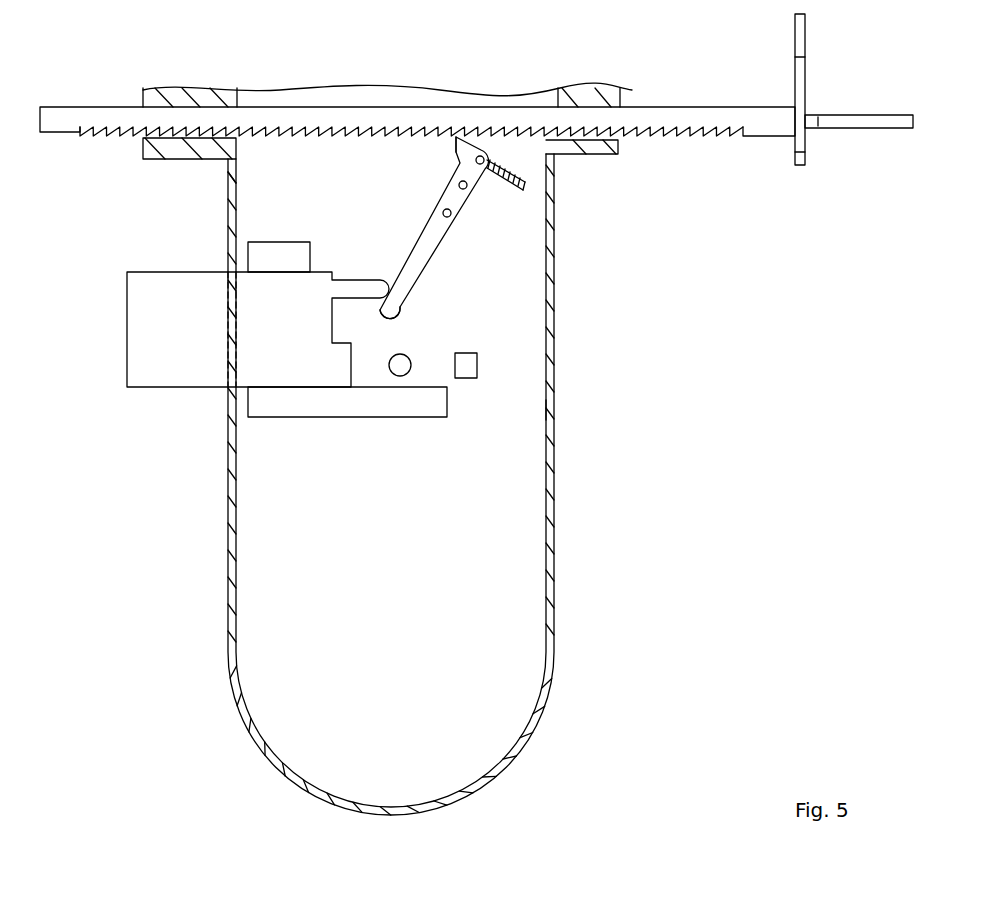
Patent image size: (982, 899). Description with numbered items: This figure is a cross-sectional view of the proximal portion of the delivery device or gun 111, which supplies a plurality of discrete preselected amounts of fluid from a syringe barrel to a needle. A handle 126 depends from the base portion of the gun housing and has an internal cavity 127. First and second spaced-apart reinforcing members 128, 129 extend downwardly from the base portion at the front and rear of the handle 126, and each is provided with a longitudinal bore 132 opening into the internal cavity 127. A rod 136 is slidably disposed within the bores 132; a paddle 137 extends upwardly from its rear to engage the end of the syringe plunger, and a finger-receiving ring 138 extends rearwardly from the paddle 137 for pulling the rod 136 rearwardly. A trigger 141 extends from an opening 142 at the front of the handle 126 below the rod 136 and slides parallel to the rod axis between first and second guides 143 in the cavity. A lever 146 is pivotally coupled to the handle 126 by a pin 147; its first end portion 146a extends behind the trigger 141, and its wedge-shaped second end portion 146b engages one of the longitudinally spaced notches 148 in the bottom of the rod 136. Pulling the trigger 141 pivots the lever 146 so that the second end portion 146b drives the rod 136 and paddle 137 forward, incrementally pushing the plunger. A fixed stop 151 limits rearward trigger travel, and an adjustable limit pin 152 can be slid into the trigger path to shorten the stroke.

The gun 111 is at (573, 380).
The handle 126 is at (554, 515).
The internal cavity 127 is at (551, 606).
The first reinforcing member 128 is at (175, 100).
The second reinforcing member 129 is at (580, 100).
The bore 132 is at (197, 145).
The rod 136 is at (68, 133).
The paddle 137 is at (805, 48).
The ring 138 is at (853, 128).
The trigger 141 is at (178, 362).
The opening 142 is at (225, 288).
The guides 143 is at (287, 255).
The lever 146 is at (440, 255).
The first end portion 146a is at (392, 312).
The second end portion 146b is at (460, 155).
The pin 147 is at (447, 216).
The notches 148 is at (130, 133).
The fixed stop 151 is at (472, 375).
The adjustable limit pin 152 is at (396, 355).